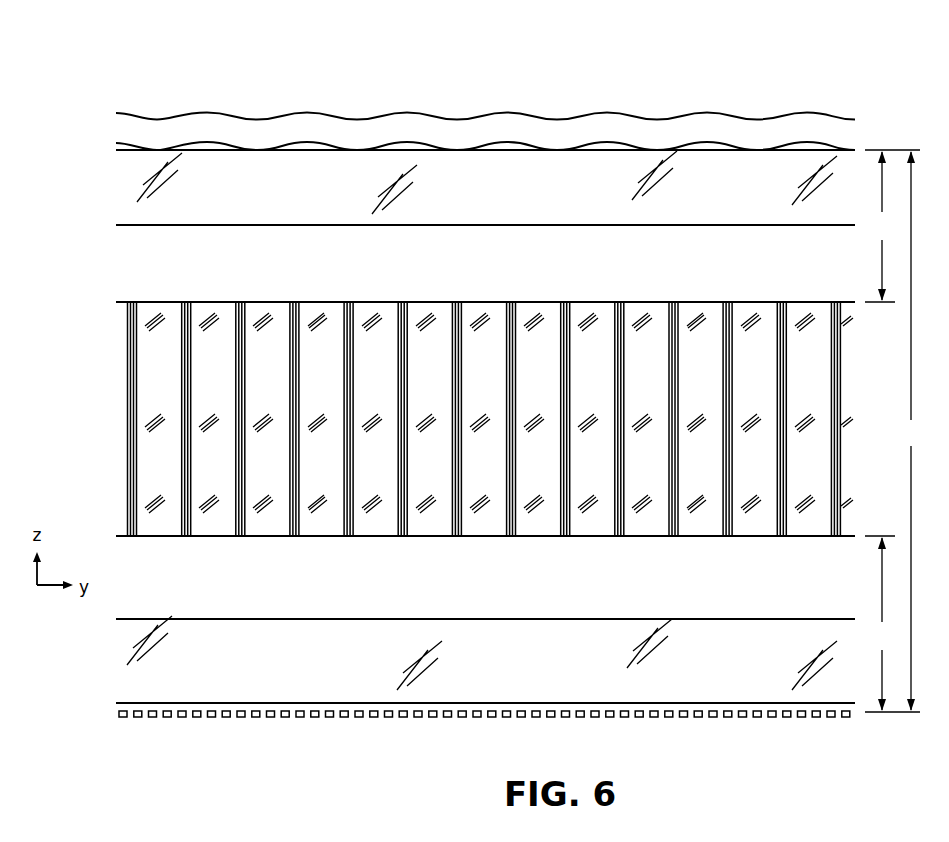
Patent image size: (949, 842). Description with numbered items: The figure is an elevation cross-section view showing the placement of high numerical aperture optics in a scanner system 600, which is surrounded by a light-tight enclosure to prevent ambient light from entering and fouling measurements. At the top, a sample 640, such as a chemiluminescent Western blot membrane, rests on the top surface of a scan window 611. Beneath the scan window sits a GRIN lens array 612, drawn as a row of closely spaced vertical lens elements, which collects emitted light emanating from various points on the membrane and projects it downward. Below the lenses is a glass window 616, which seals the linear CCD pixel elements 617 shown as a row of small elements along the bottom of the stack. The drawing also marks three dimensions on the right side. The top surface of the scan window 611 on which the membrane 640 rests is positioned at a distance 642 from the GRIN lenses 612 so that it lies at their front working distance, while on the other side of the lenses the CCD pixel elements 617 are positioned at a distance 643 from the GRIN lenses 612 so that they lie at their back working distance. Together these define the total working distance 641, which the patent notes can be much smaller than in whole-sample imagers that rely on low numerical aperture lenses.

The system 600 is at (160, 57).
The sample 640 is at (521, 113).
The scan window 611 is at (500, 197).
The GRIN lens array 612 is at (470, 394).
The glass window 616 is at (490, 666).
The linear CCD pixel elements 617 is at (855, 716).
The total working distance 641 is at (911, 431).
The distance 642 is at (892, 226).
The distance 643 is at (892, 624).